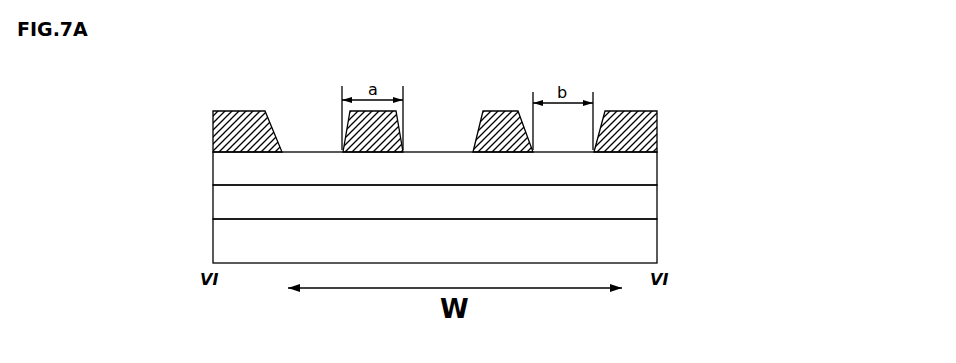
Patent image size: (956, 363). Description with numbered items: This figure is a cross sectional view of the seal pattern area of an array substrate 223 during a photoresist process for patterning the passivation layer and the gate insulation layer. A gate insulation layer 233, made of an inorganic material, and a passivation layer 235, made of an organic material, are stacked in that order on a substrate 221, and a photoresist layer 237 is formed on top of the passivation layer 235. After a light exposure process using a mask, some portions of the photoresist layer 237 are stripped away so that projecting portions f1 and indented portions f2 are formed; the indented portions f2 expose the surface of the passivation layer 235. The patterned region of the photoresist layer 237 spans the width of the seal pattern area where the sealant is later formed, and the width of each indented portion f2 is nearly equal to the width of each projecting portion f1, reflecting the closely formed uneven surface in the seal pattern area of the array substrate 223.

The photoresist layer 237 is at (657, 140).
The passivation layer 235 is at (657, 178).
The gate insulation layer 233 is at (657, 207).
The substrate 221 is at (657, 246).
The array substrate 223 is at (538, 207).
The projecting portions f1 is at (499, 110).
The indented portions f2 is at (303, 126).